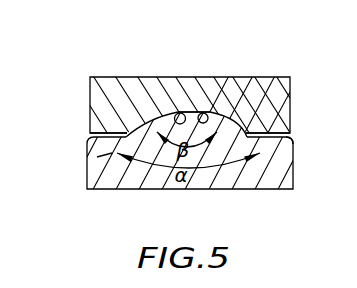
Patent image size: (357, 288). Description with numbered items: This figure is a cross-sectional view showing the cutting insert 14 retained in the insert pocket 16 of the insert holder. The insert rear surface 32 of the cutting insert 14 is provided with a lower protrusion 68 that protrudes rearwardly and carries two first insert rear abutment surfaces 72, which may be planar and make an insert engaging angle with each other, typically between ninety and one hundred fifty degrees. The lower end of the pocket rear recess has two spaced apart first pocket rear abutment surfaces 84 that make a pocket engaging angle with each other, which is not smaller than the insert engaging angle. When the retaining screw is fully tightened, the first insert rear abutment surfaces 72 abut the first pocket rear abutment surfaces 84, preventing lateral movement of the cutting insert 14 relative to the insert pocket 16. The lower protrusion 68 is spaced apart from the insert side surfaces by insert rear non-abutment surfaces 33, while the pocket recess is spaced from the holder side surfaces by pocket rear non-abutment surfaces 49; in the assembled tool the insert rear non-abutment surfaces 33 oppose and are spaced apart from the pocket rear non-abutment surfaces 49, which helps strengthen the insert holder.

The insert pocket 16 is at (79, 60).
The cutting insert 14 is at (63, 196).
The first insert rear abutment surfaces 72 is at (162, 114).
The first pocket rear abutment surfaces 84 is at (166, 113).
The lower protrusion 68 is at (193, 94).
The insert rear surface 32 is at (97, 117).
The insert rear non-abutment surfaces 33 is at (272, 134).
The pocket rear non-abutment surfaces 49 is at (288, 144).